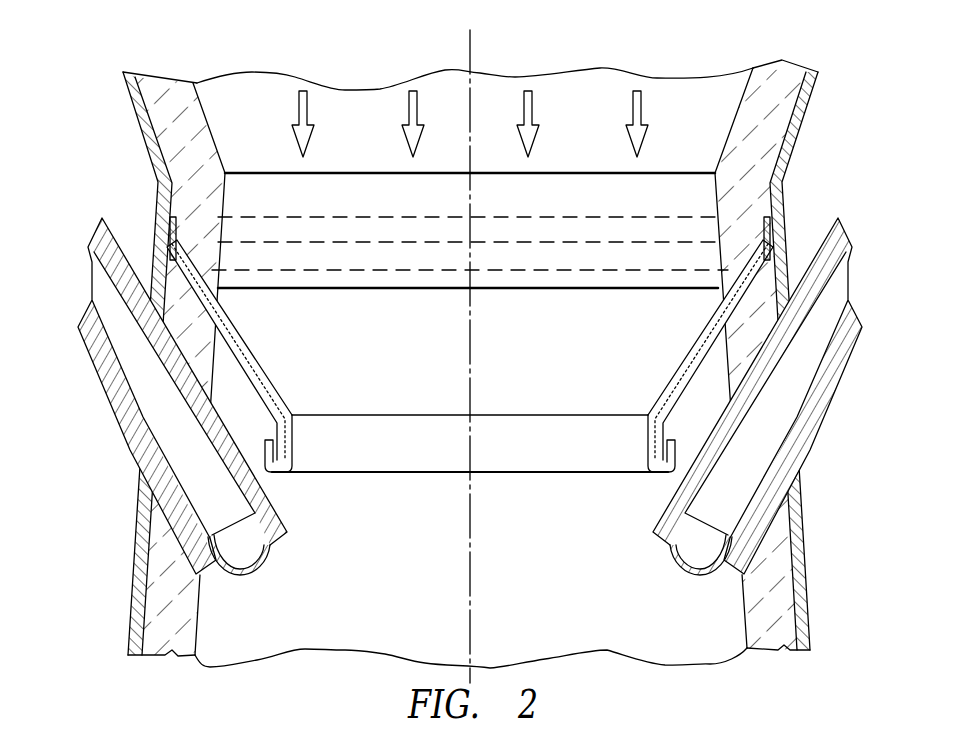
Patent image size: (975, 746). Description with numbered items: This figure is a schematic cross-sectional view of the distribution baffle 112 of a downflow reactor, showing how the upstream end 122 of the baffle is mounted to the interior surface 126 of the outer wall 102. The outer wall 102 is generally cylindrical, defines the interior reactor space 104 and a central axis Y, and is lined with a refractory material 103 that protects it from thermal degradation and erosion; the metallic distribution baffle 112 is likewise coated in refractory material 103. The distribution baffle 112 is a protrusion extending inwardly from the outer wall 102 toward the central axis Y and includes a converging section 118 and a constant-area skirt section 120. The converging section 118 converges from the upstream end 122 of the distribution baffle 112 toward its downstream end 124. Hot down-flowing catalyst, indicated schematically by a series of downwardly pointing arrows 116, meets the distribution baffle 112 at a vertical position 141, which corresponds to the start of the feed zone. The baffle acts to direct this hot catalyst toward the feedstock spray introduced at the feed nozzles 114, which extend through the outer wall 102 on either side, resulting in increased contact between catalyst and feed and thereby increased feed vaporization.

The central axis Y is at (480, 30).
The outer wall 102 is at (787, 231).
The refractory material 103 is at (270, 373).
The interior reactor space 104 is at (727, 610).
The distribution baffle 112 is at (233, 352).
The feed nozzles 114 is at (140, 452).
The downwardly pointing arrows 116 is at (637, 103).
The converging section 118 is at (697, 347).
The constant-area skirt section 120 is at (663, 433).
The upstream end 122 is at (177, 245).
The downstream end 124 is at (522, 480).
The interior surface 126 is at (145, 583).
The vertical position 141 is at (655, 280).